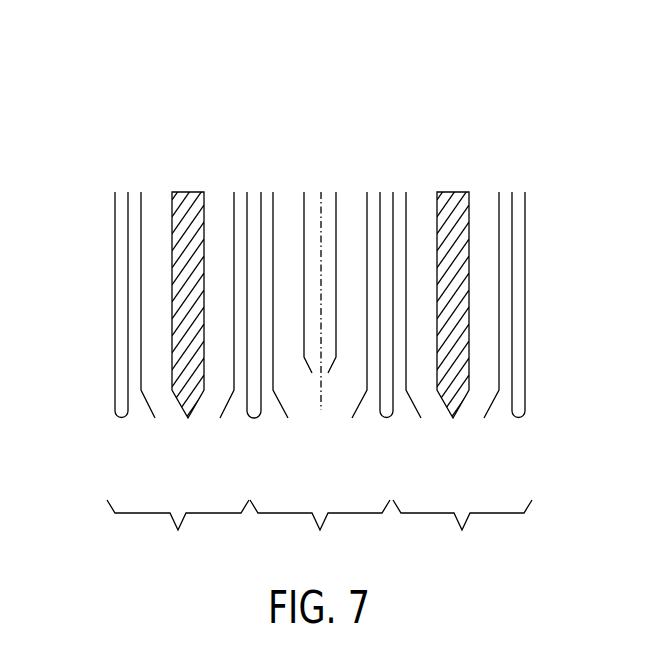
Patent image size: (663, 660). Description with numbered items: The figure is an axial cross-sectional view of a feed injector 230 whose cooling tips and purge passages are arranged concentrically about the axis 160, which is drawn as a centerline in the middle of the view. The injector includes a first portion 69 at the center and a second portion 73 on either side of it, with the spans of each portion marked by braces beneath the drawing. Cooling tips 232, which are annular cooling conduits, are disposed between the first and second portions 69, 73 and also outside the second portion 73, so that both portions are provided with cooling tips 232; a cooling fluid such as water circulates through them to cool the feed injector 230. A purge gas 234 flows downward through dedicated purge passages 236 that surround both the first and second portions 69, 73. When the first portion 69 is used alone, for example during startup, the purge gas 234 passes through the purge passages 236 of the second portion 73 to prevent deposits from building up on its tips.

The feed injector 230 is at (527, 70).
The cooling tips 232 is at (121, 418).
The purge gas 234 is at (134, 197).
The purge passages 236 is at (233, 413).
The axis 160 is at (321, 197).
The second portion 73 is at (319, 528).
The first portion 69 is at (320, 528).